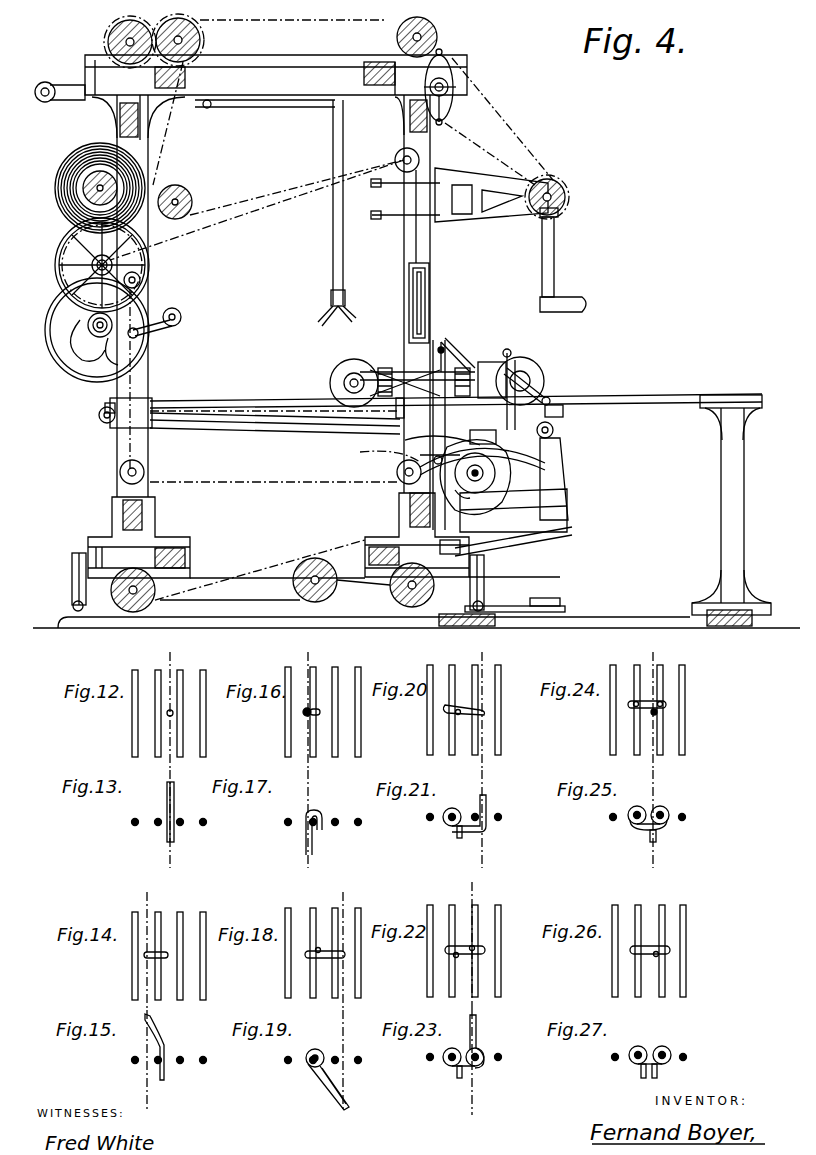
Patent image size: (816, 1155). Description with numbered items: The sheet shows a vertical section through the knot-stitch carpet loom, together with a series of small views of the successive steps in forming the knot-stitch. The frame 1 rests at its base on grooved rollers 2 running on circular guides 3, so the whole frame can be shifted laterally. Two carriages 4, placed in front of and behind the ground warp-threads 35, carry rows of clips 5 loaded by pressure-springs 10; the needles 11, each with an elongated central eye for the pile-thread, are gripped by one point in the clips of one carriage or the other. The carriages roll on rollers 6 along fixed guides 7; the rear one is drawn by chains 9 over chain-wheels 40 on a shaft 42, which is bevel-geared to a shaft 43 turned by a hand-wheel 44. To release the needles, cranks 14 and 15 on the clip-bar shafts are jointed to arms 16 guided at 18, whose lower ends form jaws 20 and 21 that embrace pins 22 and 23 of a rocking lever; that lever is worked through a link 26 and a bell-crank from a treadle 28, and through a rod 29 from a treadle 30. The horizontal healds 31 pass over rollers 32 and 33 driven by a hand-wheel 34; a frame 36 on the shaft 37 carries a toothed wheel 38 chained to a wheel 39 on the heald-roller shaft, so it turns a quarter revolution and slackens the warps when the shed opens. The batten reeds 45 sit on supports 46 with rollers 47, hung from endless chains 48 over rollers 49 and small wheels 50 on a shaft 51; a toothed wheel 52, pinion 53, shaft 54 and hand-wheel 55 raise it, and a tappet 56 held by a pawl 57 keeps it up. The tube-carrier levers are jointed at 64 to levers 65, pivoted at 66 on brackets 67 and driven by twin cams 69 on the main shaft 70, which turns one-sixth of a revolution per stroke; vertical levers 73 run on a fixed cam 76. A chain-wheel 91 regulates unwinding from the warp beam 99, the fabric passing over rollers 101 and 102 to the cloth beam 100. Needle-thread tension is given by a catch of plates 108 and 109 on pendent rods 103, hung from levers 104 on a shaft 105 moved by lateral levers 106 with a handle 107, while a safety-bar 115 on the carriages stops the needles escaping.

The frame 1 is at (404, 245).
The grooved rollers 2 is at (72, 570).
The guides 3 is at (72, 605).
The carriages 4 is at (492, 380).
The clips 5 is at (417, 358).
The rollers 6 is at (345, 364).
The fixed guides 7 is at (252, 401).
The chains 9 is at (200, 400).
The pressure-springs 10 is at (425, 365).
The needles 11 is at (408, 404).
The crank 14 is at (517, 369).
The crank 15 is at (402, 418).
The arm 16 is at (517, 383).
The guide 18 is at (547, 396).
The jaw 20 is at (482, 439).
The jaw 21 is at (395, 432).
The pin 22 is at (492, 439).
The pin 23 is at (368, 450).
The link 26 is at (475, 477).
The treadle 28 is at (547, 587).
The rod 29 is at (513, 522).
The treadle 30 is at (560, 606).
The healds 31 is at (405, 191).
The roller 32 is at (567, 205).
The roller 33 is at (192, 201).
The hand-wheel 34 is at (563, 260).
The ground warp-threads 35 is at (350, 18).
The frame 36 is at (458, 88).
The shaft 37 is at (446, 110).
The toothed wheel 38 is at (455, 76).
The wheel 39 is at (560, 185).
The chain-wheels 40 is at (99, 412).
The shaft 42 is at (100, 425).
The shaft 43 is at (218, 428).
The hand-wheel 44 is at (555, 417).
The reeds 45 is at (462, 325).
The supports 46 is at (409, 300).
The rollers 47 is at (425, 282).
The endless chains 48 is at (400, 451).
The rollers 49 is at (144, 470).
The small wheels 50 is at (65, 245).
The shaft 51 is at (92, 265).
The toothed wheel 52 is at (58, 283).
The pinion 53 is at (88, 323).
The shaft 54 is at (149, 322).
The hand-wheel 55 is at (62, 350).
The tappet 56 is at (84, 340).
The pawl 57 is at (105, 351).
The joint 64 is at (428, 452).
The levers 65 is at (460, 384).
The joint 66 is at (553, 430).
The brackets 67 is at (558, 468).
The twin cams 69 is at (484, 473).
The main shaft 70 is at (470, 501).
The vertical lever 73 is at (435, 435).
The fixed cam 76 is at (437, 547).
The chain-wheel 91 is at (172, 24).
The beam 99 is at (70, 197).
The beam 100 is at (149, 590).
The roller 101 is at (392, 592).
The roller 102 is at (275, 582).
The pendent rods 103 is at (333, 149).
The levers 104 is at (265, 107).
The shaft 105 is at (207, 108).
The lateral levers 106 is at (64, 88).
The handle 107 is at (43, 102).
The plate 108 is at (321, 324).
The plate 109 is at (357, 318).
The safety-bar 115 is at (455, 352).